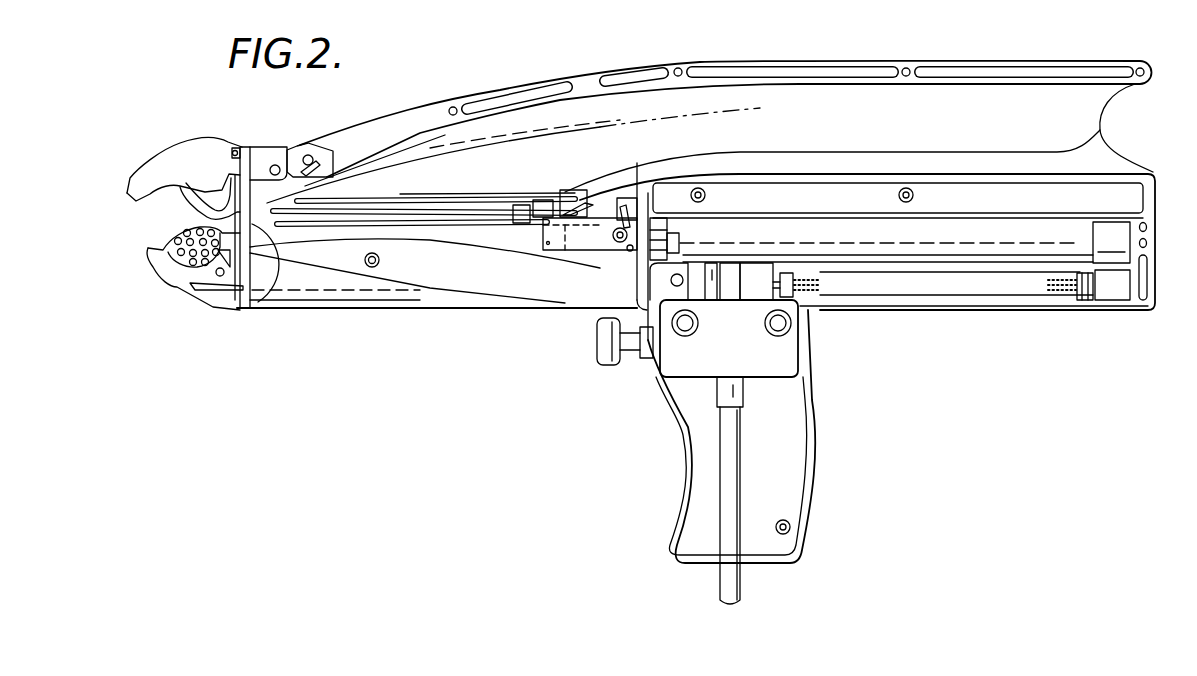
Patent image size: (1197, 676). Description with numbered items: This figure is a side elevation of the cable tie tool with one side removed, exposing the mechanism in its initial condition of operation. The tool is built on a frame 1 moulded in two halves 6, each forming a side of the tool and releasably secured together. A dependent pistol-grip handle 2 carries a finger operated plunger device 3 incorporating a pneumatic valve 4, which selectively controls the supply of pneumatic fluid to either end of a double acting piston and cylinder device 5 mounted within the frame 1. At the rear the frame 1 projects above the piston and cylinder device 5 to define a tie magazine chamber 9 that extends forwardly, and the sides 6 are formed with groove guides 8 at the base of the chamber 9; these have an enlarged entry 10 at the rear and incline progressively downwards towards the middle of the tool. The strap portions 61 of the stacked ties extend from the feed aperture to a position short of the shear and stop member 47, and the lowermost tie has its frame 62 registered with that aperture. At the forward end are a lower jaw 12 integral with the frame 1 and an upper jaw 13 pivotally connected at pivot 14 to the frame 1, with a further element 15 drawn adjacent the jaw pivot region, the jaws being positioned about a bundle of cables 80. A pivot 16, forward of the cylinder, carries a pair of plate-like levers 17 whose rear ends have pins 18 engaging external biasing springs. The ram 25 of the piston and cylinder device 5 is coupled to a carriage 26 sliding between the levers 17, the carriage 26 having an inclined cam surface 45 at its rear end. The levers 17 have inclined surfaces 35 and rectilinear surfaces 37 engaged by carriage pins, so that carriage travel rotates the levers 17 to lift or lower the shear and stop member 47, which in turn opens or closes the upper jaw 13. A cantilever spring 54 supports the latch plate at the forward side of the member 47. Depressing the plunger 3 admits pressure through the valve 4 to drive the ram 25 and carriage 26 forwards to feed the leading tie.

The frame 1 is at (980, 312).
The pistol-grip handle 2 is at (817, 483).
The finger operated plunger device 3 is at (597, 357).
The pneumatic valve 4 is at (765, 363).
The double acting piston and cylinder device 5 is at (1057, 240).
The frame halves 6 is at (923, 310).
The groove guides 8 is at (997, 157).
The tie magazine chamber 9 is at (903, 110).
The enlarged entry 10 is at (1113, 150).
The lower jaw 12 is at (177, 277).
The upper jaw 13 is at (167, 160).
The pivot 14 is at (276, 166).
The rail end block 15 is at (284, 154).
The pivot 16 is at (369, 267).
The levers 17 is at (448, 270).
The pins 18 is at (630, 252).
The ram 25 is at (677, 250).
The carriage 26 is at (603, 218).
The inclined surfaces 35 is at (613, 243).
The rectilinear surfaces 37 is at (410, 246).
The cam surface 45 is at (590, 240).
The shear and stop member 47 is at (268, 236).
The cantilever spring 54 is at (220, 291).
The strap portions 61 is at (381, 200).
The frame 62 is at (523, 207).
The bundle of cables 80 is at (170, 240).